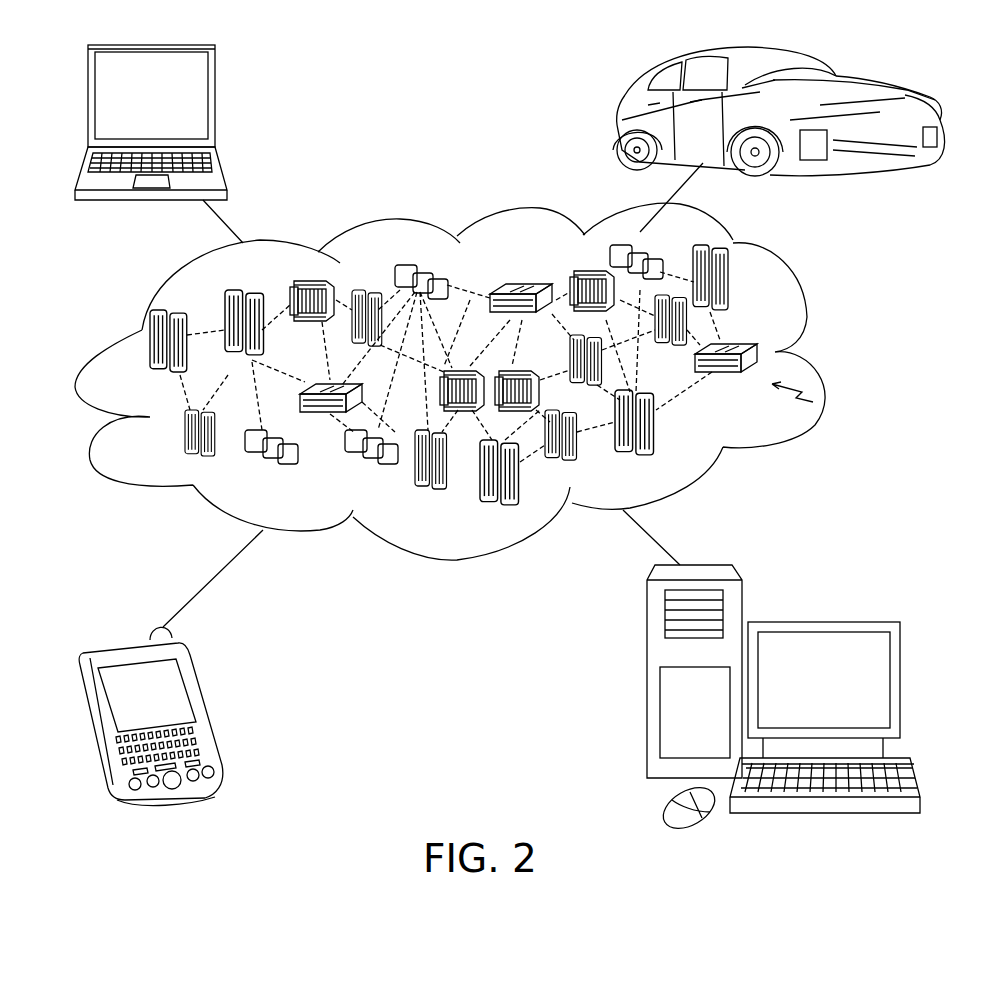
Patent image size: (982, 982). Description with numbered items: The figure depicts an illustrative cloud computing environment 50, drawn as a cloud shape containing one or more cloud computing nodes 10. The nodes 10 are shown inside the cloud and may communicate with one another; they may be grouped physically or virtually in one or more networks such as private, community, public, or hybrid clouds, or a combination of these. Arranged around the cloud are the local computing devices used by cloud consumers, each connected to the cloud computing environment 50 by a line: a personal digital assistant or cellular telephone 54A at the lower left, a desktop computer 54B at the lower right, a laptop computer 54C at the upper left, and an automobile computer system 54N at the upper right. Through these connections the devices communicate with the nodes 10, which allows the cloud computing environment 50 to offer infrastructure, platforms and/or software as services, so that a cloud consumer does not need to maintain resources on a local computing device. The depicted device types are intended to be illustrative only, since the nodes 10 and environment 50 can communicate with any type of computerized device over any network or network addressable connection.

The cloud computing node 10 is at (813, 402).
The cloud computing environment 50 is at (827, 357).
The personal digital assistant (PDA) or cellular telephone 54A is at (205, 707).
The desktop computer 54B is at (822, 620).
The laptop computer 54C is at (215, 105).
The automobile computer system 54N is at (617, 120).